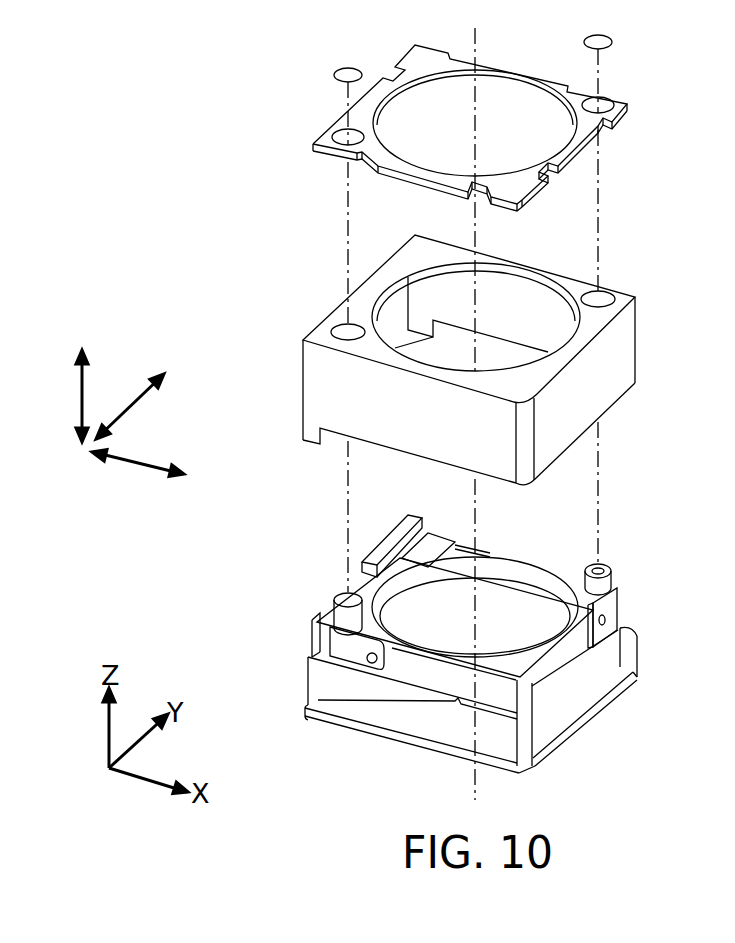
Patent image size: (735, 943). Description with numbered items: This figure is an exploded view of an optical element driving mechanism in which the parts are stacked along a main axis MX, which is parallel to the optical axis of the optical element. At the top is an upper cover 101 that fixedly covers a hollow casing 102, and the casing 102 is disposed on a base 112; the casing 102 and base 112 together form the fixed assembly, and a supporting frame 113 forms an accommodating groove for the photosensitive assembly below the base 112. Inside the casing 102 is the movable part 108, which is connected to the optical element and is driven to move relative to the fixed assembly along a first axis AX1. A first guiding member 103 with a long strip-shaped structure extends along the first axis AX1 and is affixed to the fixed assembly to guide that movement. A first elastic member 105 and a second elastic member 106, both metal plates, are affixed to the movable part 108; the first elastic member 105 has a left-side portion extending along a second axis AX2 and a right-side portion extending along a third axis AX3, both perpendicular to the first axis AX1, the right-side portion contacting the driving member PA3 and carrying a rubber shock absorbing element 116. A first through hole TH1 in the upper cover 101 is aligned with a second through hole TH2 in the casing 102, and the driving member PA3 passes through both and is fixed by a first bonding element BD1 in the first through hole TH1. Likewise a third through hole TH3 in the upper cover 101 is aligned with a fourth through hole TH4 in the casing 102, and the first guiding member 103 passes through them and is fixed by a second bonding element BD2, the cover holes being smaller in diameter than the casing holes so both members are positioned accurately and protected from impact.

The main axis MX is at (475, 400).
The upper cover 101 is at (492, 60).
The casing 102 is at (637, 340).
The first guiding member 103 is at (605, 589).
The first elastic member 105 is at (348, 655).
The second elastic member 106 is at (620, 613).
The movable part 108 is at (583, 643).
The base 112 is at (592, 675).
The supporting frame 113 is at (570, 752).
The shock absorbing element 116 is at (316, 640).
The first bonding element BD1 is at (334, 75).
The second bonding element BD2 is at (612, 42).
The first through hole TH1 is at (340, 133).
The second through hole TH2 is at (340, 328).
The third through hole TH3 is at (605, 103).
The fourth through hole TH4 is at (608, 296).
The driving member PA3 is at (342, 598).
The first axis AX1 is at (80, 380).
The second axis AX2 is at (171, 471).
The third axis AX3 is at (144, 392).